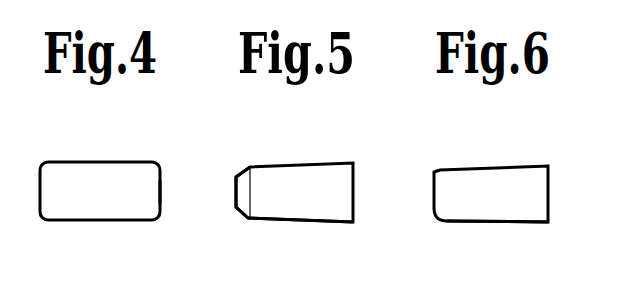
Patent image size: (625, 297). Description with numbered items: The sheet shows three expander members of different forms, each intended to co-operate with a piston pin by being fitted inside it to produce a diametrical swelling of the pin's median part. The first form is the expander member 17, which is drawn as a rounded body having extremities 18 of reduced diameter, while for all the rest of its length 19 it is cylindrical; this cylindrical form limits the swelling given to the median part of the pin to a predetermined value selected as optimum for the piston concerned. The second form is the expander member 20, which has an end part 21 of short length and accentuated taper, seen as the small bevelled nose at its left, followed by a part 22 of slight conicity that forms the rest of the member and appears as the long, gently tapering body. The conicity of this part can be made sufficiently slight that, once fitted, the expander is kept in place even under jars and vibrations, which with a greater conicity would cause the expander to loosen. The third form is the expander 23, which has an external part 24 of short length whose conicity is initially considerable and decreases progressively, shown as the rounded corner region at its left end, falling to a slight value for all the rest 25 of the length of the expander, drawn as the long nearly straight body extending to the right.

In FIG. 4, the expander member 17 is at (98, 202).
In FIG. 4, the extremities 18 is at (158, 195).
In FIG. 4, the cylindrical length 19 is at (113, 163).
In FIG. 5, the expander member 20 is at (293, 180).
In FIG. 5, the end part 21 is at (243, 170).
In FIG. 5, the part of slight conicity 22 is at (323, 220).
In FIG. 6, the expander 23 is at (497, 182).
In FIG. 6, the external part 24 is at (440, 172).
In FIG. 6, the rest of the length 25 is at (515, 222).